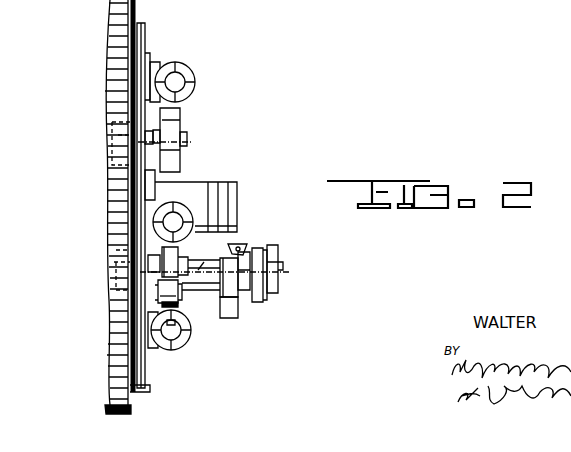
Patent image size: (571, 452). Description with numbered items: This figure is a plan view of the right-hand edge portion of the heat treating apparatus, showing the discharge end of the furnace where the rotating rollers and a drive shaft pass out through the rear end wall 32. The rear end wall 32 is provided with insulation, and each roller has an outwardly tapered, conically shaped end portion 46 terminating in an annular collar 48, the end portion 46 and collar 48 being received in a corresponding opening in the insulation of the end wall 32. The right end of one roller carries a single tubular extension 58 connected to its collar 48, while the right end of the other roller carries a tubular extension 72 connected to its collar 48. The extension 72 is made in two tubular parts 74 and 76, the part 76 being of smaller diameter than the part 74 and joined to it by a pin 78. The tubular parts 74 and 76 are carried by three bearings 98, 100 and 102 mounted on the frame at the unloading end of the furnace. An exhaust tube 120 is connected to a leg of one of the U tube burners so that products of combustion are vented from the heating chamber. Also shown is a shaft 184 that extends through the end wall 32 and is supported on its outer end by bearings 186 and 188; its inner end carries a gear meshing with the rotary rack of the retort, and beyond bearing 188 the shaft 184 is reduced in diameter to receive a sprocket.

The rear end wall 32 is at (118, 17).
The end portion 46 is at (103, 169).
The annular collar 48 is at (100, 250).
The tubular extension 58 is at (147, 132).
The tubular extension 72 is at (147, 256).
The tubular part 74 is at (157, 270).
The tubular part 76 is at (198, 266).
The pin 78 is at (205, 298).
The bearing 98 is at (172, 124).
The bearing 100 is at (238, 251).
The bearing 102 is at (279, 250).
The exhaust tube 120 is at (195, 72).
The shaft 184 is at (193, 296).
The bearing 186 is at (162, 297).
The bearing 188 is at (232, 311).